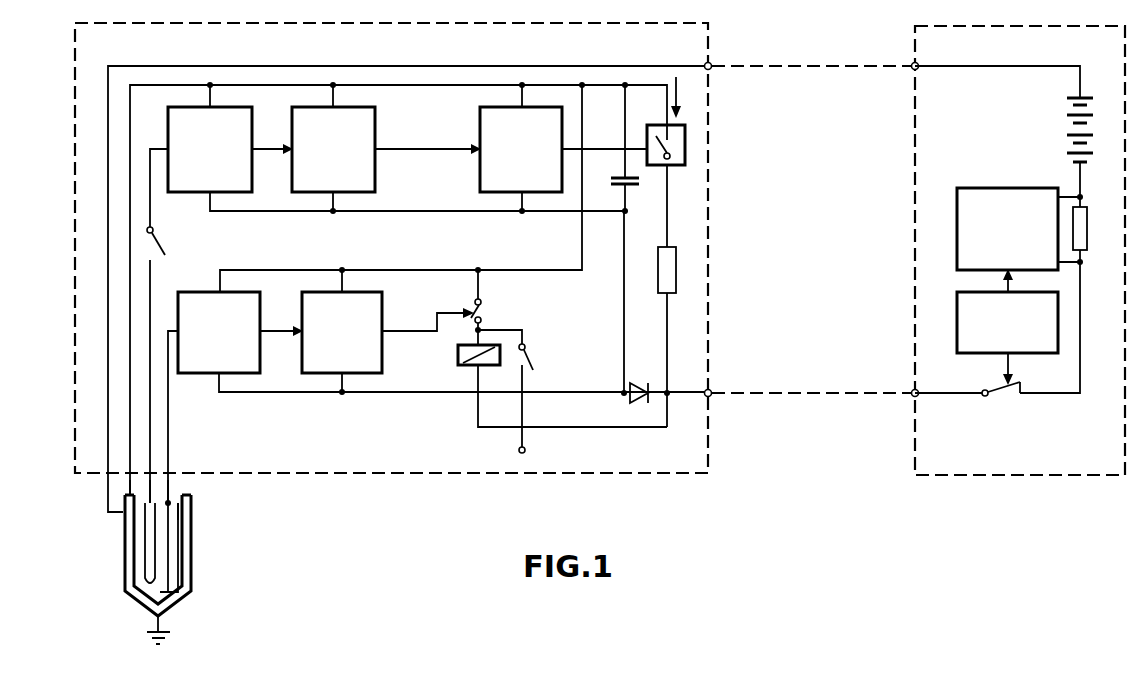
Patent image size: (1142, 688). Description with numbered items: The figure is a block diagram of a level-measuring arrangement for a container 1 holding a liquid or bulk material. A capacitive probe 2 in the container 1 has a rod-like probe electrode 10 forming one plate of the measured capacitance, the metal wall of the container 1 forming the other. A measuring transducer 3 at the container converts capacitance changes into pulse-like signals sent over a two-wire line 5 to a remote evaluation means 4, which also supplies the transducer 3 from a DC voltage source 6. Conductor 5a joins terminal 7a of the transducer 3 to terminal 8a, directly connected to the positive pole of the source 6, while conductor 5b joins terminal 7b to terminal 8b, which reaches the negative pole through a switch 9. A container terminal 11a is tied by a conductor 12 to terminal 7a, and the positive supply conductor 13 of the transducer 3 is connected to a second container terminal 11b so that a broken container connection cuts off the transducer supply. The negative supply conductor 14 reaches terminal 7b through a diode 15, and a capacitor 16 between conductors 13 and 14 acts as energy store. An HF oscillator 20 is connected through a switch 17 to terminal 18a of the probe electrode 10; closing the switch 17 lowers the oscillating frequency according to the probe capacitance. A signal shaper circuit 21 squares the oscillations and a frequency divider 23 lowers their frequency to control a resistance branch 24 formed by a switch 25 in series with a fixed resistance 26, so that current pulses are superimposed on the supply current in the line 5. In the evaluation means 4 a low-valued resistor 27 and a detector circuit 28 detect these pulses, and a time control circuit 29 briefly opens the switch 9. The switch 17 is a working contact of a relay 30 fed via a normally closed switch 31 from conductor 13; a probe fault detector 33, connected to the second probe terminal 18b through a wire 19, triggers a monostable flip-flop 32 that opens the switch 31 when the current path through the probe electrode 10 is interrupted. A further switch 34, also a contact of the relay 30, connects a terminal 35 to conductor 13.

The container 1 is at (193, 592).
The capacitive probe 2 is at (160, 547).
The measuring transducer 3 is at (444, 478).
The evaluation means 4 is at (984, 475).
The two-wire line 5 is at (812, 213).
The conductor 5a is at (772, 68).
The conductor 5b is at (772, 370).
The DC voltage source 6 is at (1067, 122).
The terminal 7a is at (711, 63).
The terminal 7b is at (711, 389).
The terminal 8a is at (912, 63).
The terminal 8b is at (912, 391).
The switch 9 is at (1028, 375).
The probe electrode 10 is at (147, 569).
The terminal 11a is at (122, 514).
The terminal 11b is at (128, 494).
The conductor 12 is at (210, 64).
The conductor 13 is at (390, 85).
The conductor 14 is at (377, 213).
The diode 15 is at (640, 382).
The capacitor 16 is at (634, 186).
The switch 17 is at (164, 240).
The terminal 18a is at (153, 503).
The terminal 18b is at (170, 503).
The wire 19 is at (176, 521).
The HF oscillator 20 is at (258, 104).
The signal shaper circuit 21 is at (375, 112).
The frequency divider 23 is at (480, 176).
The resistance branch 24 is at (648, 95).
The switch 25 is at (683, 166).
The fixed resistance 26 is at (676, 292).
The resistor 27 is at (1087, 247).
The detector circuit 28 is at (981, 188).
The time control circuit 29 is at (960, 350).
The relay 30 is at (456, 362).
The switch 31 is at (486, 310).
The monostable flip-flop 32 is at (382, 296).
The probe fault detector 33 is at (256, 296).
The switch 34 is at (530, 357).
The terminal 35 is at (526, 451).